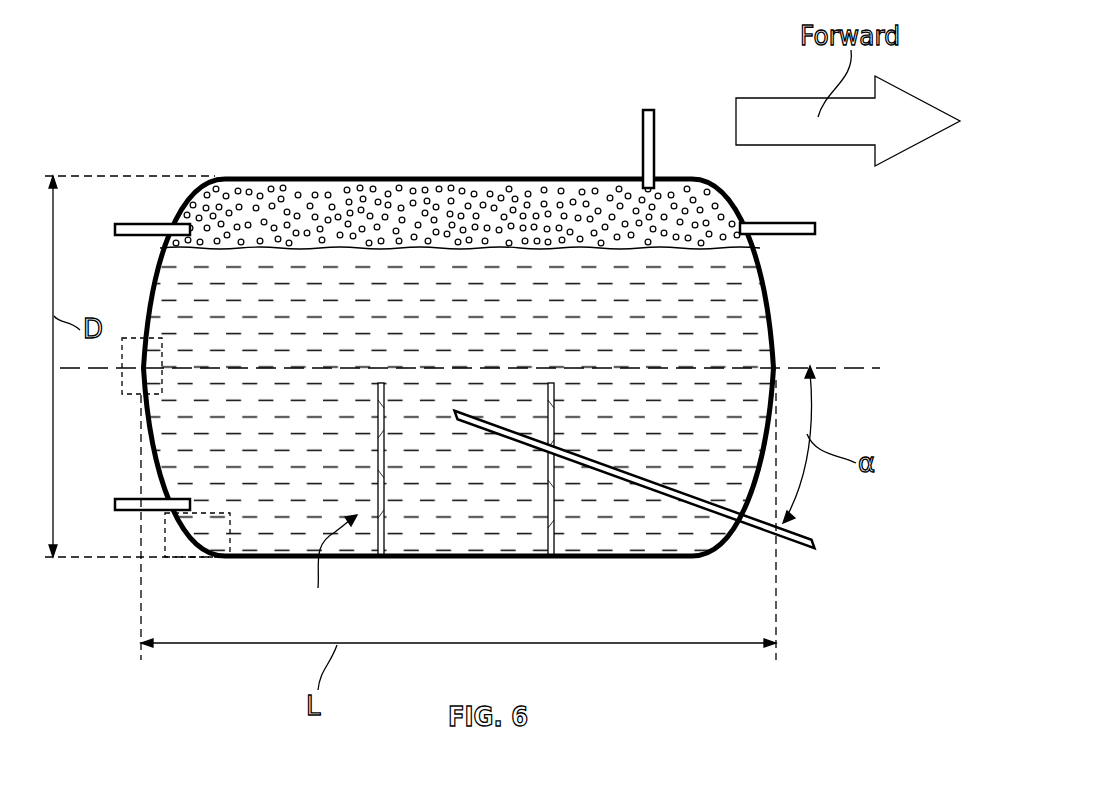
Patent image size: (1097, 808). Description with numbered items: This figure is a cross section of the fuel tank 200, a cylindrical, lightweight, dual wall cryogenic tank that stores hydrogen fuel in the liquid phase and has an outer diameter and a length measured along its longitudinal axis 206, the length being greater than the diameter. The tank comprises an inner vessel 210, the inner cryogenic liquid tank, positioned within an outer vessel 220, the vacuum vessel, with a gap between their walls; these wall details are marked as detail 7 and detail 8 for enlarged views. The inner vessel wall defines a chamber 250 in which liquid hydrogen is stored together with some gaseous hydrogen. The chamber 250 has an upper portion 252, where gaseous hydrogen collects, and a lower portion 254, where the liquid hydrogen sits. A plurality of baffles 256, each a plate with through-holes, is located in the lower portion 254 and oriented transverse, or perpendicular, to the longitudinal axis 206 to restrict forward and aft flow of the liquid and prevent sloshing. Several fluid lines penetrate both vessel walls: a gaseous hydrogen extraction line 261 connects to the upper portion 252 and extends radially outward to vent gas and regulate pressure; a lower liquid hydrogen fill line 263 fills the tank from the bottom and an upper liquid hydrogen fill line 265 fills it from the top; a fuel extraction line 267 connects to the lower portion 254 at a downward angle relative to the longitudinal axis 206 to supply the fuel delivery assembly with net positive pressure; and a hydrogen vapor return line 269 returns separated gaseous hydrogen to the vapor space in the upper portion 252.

The fuel tank 200 is at (666, 55).
The longitudinal axis 206 is at (845, 366).
The inner vessel 210 is at (495, 192).
The outer vessel 220 is at (421, 178).
The chamber 250 is at (478, 329).
The upper portion 252 is at (279, 193).
The lower portion 254 is at (327, 567).
The baffles 256 is at (385, 508).
The gaseous hydrogen extraction line 261 is at (643, 150).
The lower liquid hydrogen fill line 263 is at (156, 503).
The upper liquid hydrogen fill line 265 is at (156, 229).
The fuel extraction line 267 is at (750, 534).
The hydrogen vapor return line 269 is at (775, 228).
The detail 7 is at (136, 396).
The detail 8 is at (184, 560).